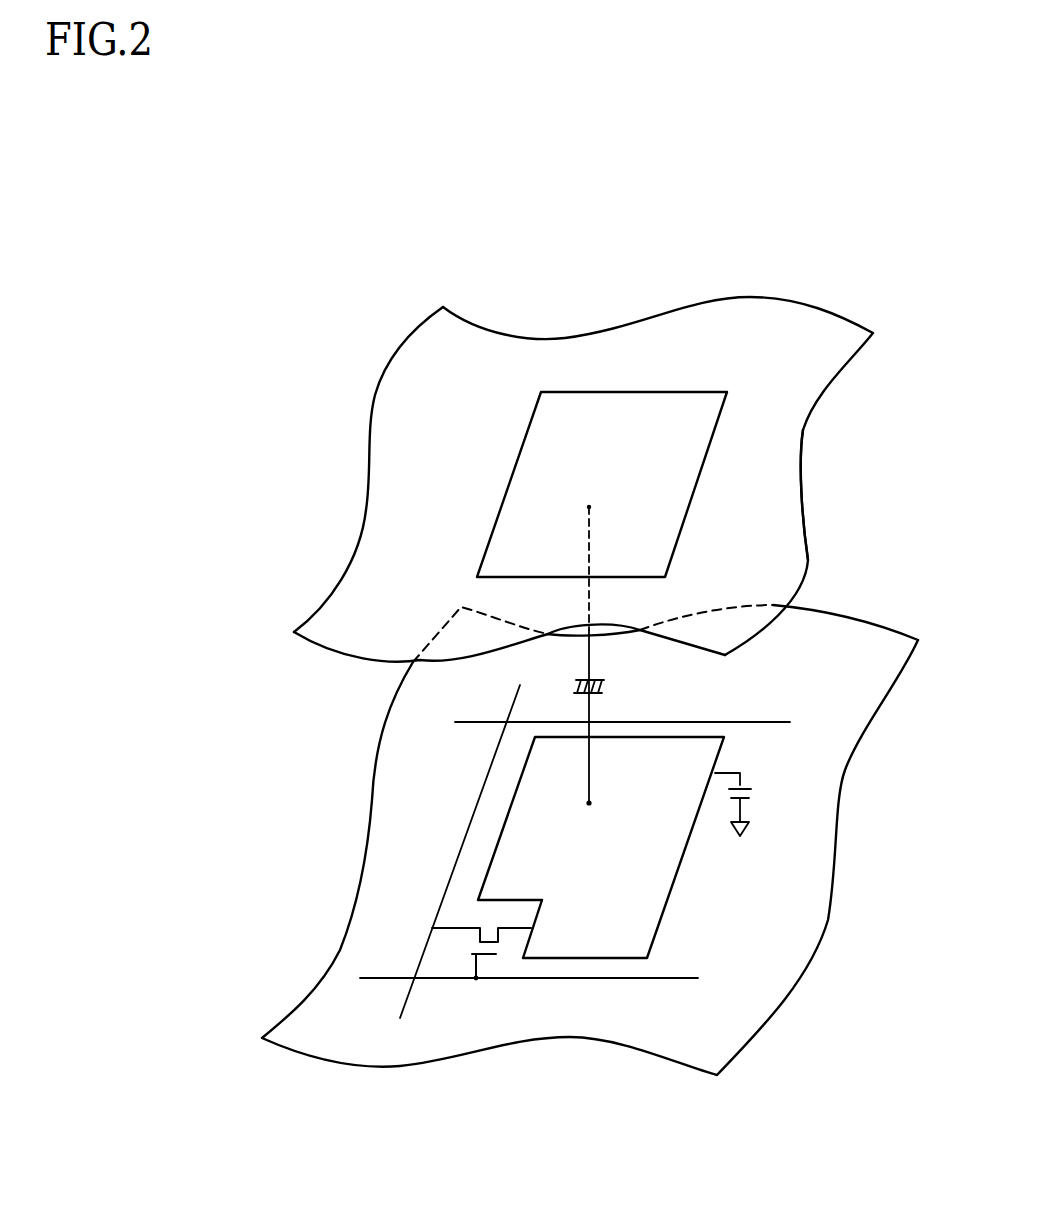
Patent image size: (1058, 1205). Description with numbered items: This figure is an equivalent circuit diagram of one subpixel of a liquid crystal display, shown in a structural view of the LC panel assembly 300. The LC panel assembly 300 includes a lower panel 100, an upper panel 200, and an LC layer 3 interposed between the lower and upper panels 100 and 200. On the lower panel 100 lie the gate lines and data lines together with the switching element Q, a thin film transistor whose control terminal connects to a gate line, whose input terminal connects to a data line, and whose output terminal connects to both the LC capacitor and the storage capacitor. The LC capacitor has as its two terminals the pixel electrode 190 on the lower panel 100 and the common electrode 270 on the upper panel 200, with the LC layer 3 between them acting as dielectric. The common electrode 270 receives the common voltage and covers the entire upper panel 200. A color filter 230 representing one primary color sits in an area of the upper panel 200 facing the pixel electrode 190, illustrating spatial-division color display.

The LC panel assembly 300 is at (332, 333).
The upper panel 200 is at (820, 506).
The common electrode 270 is at (801, 451).
The color filter 230 is at (697, 497).
The LC layer 3 is at (280, 737).
The lower panel 100 is at (857, 820).
The pixel electrode 190 is at (669, 904).